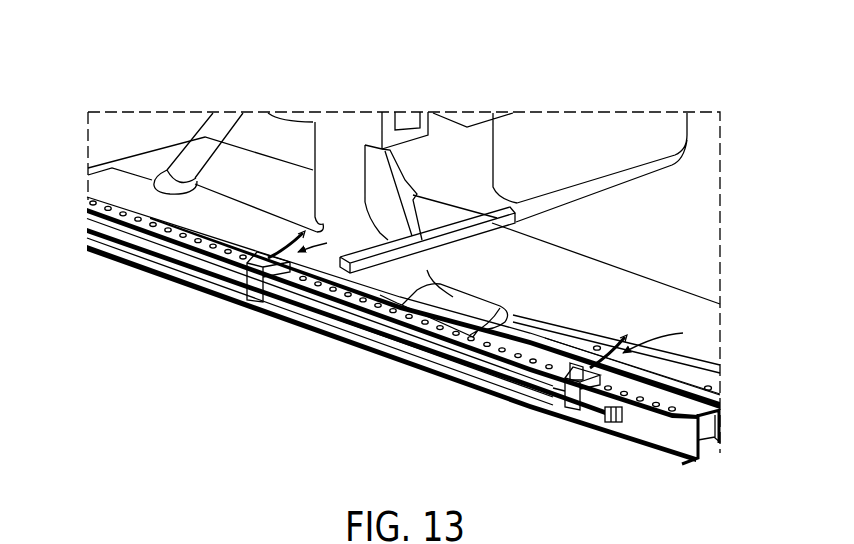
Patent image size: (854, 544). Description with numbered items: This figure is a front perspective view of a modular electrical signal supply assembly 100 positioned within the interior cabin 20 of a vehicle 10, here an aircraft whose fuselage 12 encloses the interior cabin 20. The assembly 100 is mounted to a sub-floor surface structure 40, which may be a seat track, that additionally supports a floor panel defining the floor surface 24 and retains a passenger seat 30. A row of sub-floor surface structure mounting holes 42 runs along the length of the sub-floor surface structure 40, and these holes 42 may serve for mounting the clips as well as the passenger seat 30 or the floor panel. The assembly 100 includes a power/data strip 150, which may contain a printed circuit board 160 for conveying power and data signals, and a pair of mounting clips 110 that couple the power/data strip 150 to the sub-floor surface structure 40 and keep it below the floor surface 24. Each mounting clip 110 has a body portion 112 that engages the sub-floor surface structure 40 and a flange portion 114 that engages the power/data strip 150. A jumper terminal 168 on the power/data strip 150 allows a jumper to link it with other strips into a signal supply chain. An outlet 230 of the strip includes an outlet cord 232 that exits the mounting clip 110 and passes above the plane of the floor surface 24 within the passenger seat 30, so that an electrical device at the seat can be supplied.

The vehicle 10 is at (266, 46).
The fuselage 12 is at (273, 72).
The interior cabin 20 is at (281, 99).
The floor surface 24 is at (641, 280).
The passenger seat 30 is at (572, 210).
The sub-floor surface structure 40 is at (681, 468).
The sub-floor surface structure mounting hole 42 is at (674, 407).
The modular electrical signal supply assembly 100 is at (558, 323).
The mounting clip 110 is at (253, 304).
The body portion 112 is at (569, 364).
The flange portion 114 is at (560, 387).
The power/data strip 150 is at (352, 334).
The printed circuit board 160 is at (387, 340).
The jumper terminal 168 is at (616, 424).
The outlet 230 is at (504, 288).
The outlet cord 232 is at (291, 248).